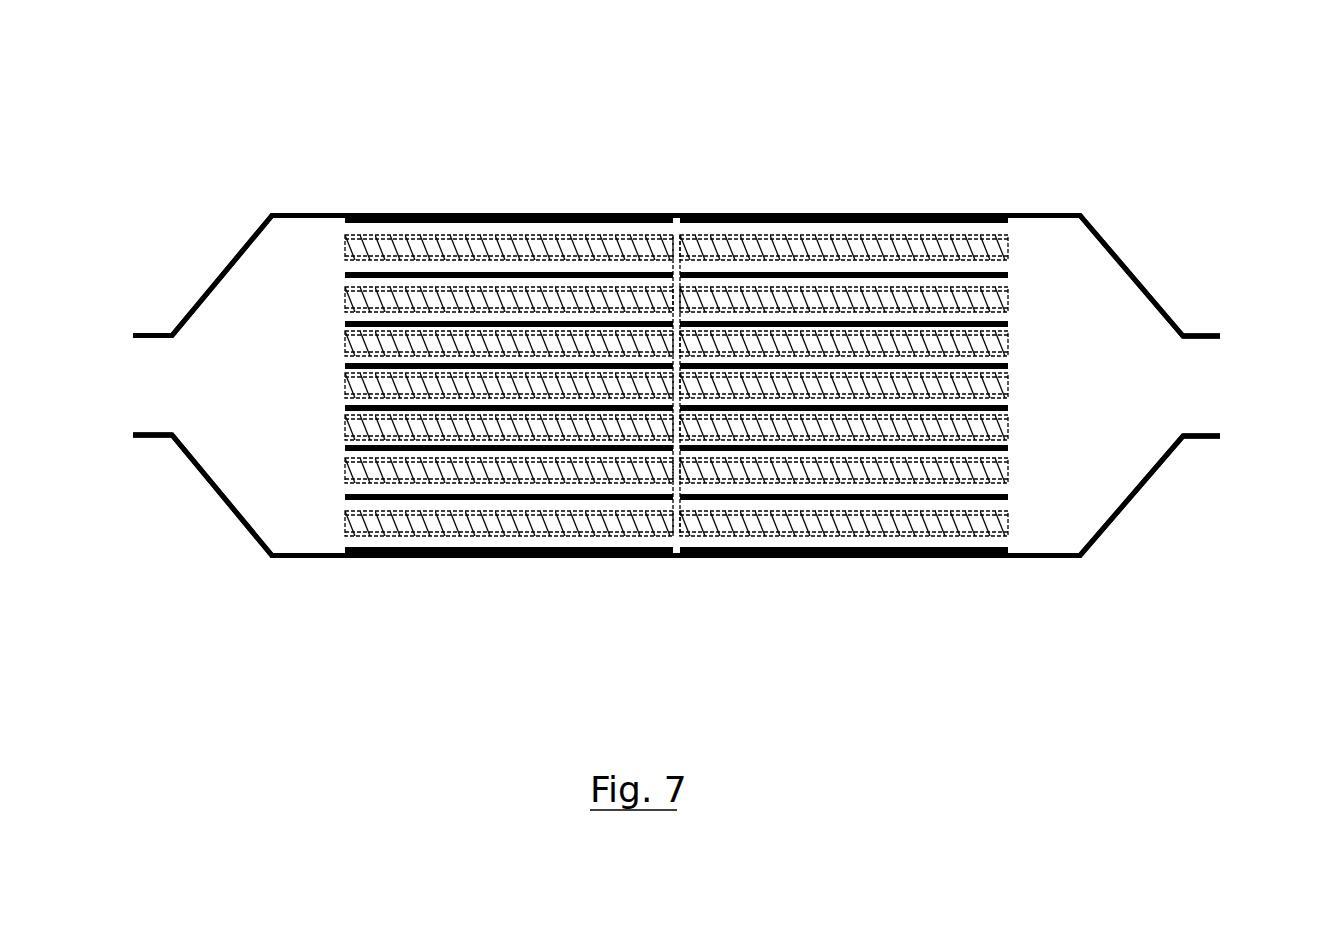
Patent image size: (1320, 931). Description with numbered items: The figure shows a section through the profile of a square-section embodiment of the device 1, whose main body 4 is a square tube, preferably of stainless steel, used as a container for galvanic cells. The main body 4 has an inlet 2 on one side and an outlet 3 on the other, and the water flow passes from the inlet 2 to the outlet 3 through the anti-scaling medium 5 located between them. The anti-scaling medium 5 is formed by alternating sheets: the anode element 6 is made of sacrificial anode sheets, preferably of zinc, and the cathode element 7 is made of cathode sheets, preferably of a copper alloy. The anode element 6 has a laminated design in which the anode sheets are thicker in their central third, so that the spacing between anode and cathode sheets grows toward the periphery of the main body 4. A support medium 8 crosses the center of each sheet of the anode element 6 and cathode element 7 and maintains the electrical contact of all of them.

The device 1 is at (138, 162).
The inlet 2 is at (142, 383).
The outlet 3 is at (1207, 373).
The main body 4 is at (412, 212).
The anti-scaling medium 5 is at (830, 270).
The anode element 6 is at (1006, 375).
The cathode element 7 is at (347, 365).
The support medium 8 is at (679, 476).